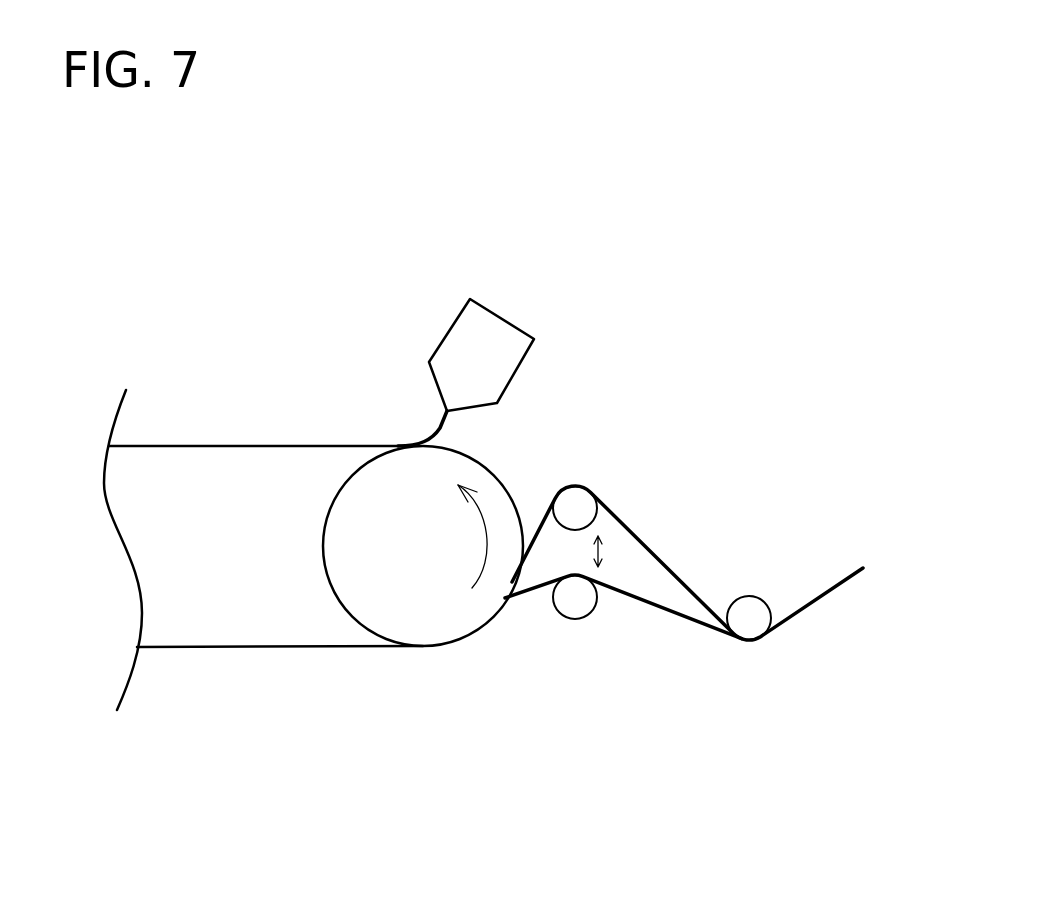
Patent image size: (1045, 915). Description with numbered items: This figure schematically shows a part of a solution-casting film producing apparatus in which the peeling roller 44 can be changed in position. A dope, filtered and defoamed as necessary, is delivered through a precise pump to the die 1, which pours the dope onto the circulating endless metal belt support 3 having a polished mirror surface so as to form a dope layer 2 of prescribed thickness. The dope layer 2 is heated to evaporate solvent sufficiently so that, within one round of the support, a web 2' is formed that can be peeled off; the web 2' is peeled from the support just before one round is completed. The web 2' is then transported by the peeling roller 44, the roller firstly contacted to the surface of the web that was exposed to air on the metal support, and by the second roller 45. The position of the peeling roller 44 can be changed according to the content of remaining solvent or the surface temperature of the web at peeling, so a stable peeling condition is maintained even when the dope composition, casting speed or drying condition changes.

The die 1 is at (491, 335).
The dope layer 2 is at (278, 387).
The endless metal belt support 3 is at (492, 467).
The peeling roller 44 is at (588, 597).
The web 2' is at (684, 595).
The second roller 45 is at (750, 628).